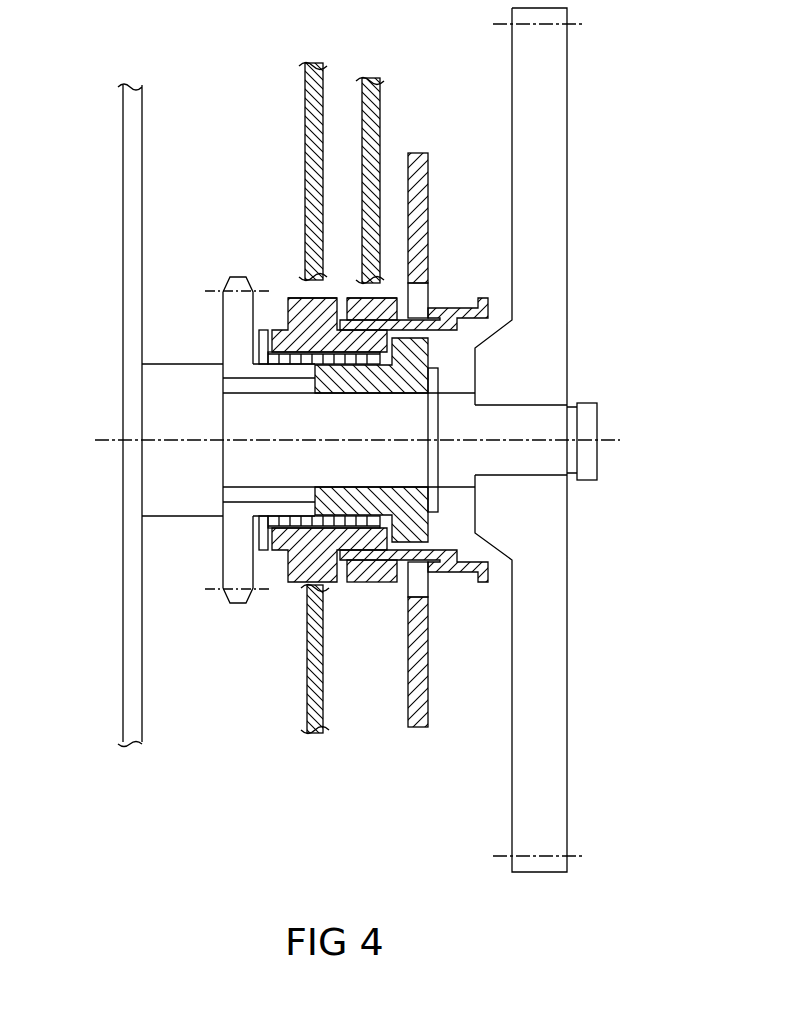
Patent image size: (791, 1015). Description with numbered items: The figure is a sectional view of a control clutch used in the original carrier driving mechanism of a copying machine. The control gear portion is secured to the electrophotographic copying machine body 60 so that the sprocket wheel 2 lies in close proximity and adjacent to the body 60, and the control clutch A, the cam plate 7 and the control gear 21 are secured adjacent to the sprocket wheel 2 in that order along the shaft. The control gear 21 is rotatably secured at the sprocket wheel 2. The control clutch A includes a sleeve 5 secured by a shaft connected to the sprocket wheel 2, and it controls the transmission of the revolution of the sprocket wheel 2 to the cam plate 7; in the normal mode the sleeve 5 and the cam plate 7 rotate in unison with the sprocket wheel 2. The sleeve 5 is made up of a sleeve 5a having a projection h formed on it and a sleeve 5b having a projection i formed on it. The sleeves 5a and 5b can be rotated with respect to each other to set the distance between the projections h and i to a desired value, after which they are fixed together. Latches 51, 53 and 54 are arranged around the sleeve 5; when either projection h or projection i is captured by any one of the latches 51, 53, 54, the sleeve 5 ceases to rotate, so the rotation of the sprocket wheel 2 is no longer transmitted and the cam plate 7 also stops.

The electrophotographic copying machine body 60 is at (132, 118).
The sprocket wheel 2 is at (222, 565).
The sleeve 5 is at (295, 297).
The sleeve 5a is at (292, 567).
The sleeve 5b is at (457, 585).
The cam plate 7 is at (427, 210).
The control gear 21 is at (568, 252).
The latch 51 is at (378, 105).
The latch 53 is at (320, 707).
The latch 54 is at (305, 82).
The projection h is at (335, 298).
The projection i is at (392, 298).
The control clutch A is at (437, 583).